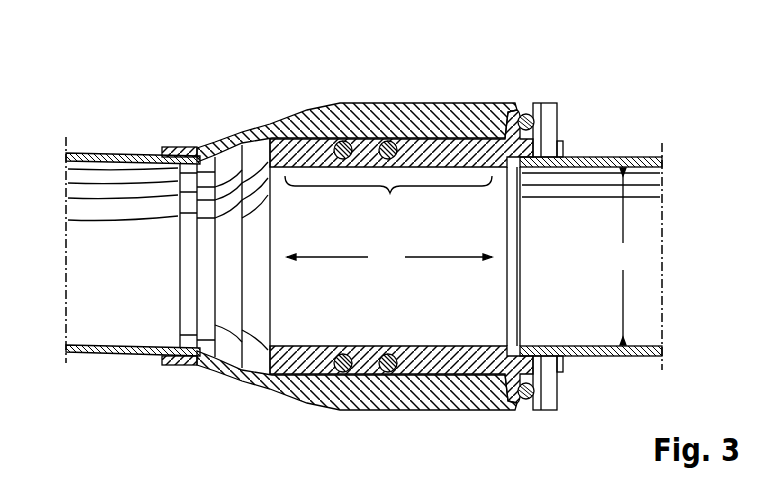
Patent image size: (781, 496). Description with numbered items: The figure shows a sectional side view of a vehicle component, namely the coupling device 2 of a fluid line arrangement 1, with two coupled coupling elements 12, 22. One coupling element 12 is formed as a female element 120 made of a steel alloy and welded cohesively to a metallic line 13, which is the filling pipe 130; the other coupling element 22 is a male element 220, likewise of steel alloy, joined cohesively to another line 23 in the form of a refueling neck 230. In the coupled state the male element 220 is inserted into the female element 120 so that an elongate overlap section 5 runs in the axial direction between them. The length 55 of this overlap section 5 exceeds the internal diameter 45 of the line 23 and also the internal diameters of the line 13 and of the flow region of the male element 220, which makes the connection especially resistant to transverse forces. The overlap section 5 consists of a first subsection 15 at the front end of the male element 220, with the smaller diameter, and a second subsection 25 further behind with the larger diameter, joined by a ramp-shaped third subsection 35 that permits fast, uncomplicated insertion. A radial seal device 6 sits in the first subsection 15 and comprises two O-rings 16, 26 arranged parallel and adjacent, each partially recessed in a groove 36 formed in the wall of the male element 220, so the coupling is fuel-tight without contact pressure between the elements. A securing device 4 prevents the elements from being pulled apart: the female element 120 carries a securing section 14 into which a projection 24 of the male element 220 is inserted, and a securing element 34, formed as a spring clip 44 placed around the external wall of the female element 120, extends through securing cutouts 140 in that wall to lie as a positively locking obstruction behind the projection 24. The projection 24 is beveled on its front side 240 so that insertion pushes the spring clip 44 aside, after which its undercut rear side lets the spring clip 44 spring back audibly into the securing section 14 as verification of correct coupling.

The fluid line arrangement 1 is at (84, 70).
The coupling device 2 is at (177, 114).
The securing device 4 is at (594, 437).
The overlap section 5 is at (388, 201).
The seal device 6 is at (353, 334).
The coupling element 12 is at (206, 370).
The line 13 is at (98, 366).
The securing section 14 is at (562, 388).
The first subsection 15 is at (305, 117).
The O-ring 16 is at (342, 408).
The coupling element 22 is at (285, 376).
The line 23 is at (590, 146).
The projection 24 is at (500, 346).
The second subsection 25 is at (480, 117).
The O-ring 26 is at (390, 409).
The securing element 34 is at (523, 408).
The third subsection 35 is at (422, 118).
The groove 36 is at (333, 354).
The spring clip 44 is at (537, 352).
The internal diameter 45 is at (622, 256).
The length 55 is at (389, 257).
The female element 120 is at (248, 362).
The filling pipe 130 is at (133, 358).
The securing cutouts 140 is at (532, 417).
The male element 220 is at (314, 380).
The refueling neck 230 is at (645, 154).
The front side 240 is at (493, 411).